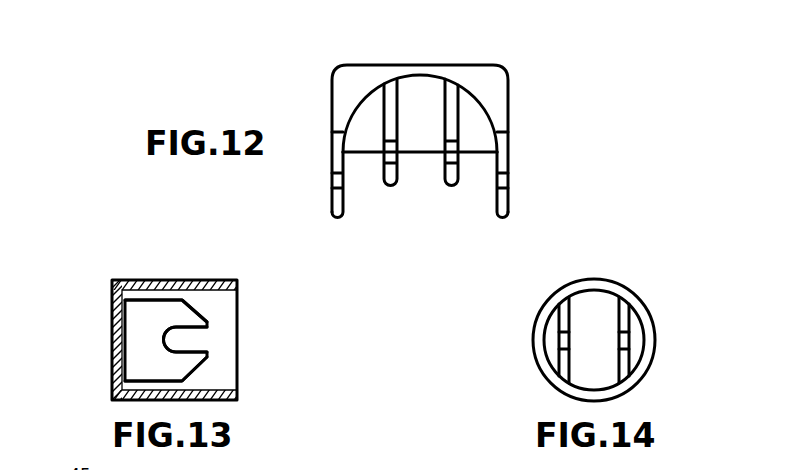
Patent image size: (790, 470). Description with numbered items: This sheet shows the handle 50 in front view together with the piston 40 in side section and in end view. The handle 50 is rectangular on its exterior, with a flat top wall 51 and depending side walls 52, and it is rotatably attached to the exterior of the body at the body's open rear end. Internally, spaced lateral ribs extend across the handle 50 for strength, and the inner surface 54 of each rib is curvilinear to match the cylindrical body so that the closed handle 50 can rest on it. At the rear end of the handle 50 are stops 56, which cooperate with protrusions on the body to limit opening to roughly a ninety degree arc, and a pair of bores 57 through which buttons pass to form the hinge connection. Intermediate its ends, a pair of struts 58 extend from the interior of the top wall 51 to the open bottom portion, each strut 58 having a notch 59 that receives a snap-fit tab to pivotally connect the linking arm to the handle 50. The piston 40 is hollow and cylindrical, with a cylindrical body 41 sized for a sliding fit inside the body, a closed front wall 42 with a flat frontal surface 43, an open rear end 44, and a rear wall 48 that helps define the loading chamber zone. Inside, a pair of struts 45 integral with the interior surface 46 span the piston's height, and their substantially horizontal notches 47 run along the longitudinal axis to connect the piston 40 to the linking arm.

In FIG. 13, the piston 40 is at (258, 330).
In FIG. 14, the piston 40 is at (672, 341).
In FIG. 14, the cylindrical body 41 is at (652, 366).
In FIG. 13, the closed front wall 42 is at (111, 307).
In FIG. 14, the closed front wall 42 is at (593, 338).
In FIG. 13, the flat frontal surface 43 is at (108, 353).
In FIG. 13, the open rear end 44 is at (237, 308).
In FIG. 13, the struts 45 is at (147, 323).
In FIG. 14, the struts 45 is at (559, 304).
In FIG. 14, the interior surface 46 is at (591, 293).
In FIG. 13, the notches 47 is at (193, 341).
In FIG. 14, the notches 47 is at (560, 336).
In FIG. 13, the rear wall 48 is at (237, 378).
In FIG. 14, the rear wall 48 is at (540, 350).
In FIG. 12, the handle 50 is at (516, 57).
In FIG. 12, the flat top wall 51 is at (404, 62).
In FIG. 12, the side walls 52 is at (332, 118).
In FIG. 12, the inner surface of rib 54 is at (466, 152).
In FIG. 12, the stops 56 is at (446, 163).
In FIG. 12, the bores 57 is at (332, 152).
In FIG. 12, the struts 58 is at (446, 121).
In FIG. 12, the notch 59 is at (446, 157).